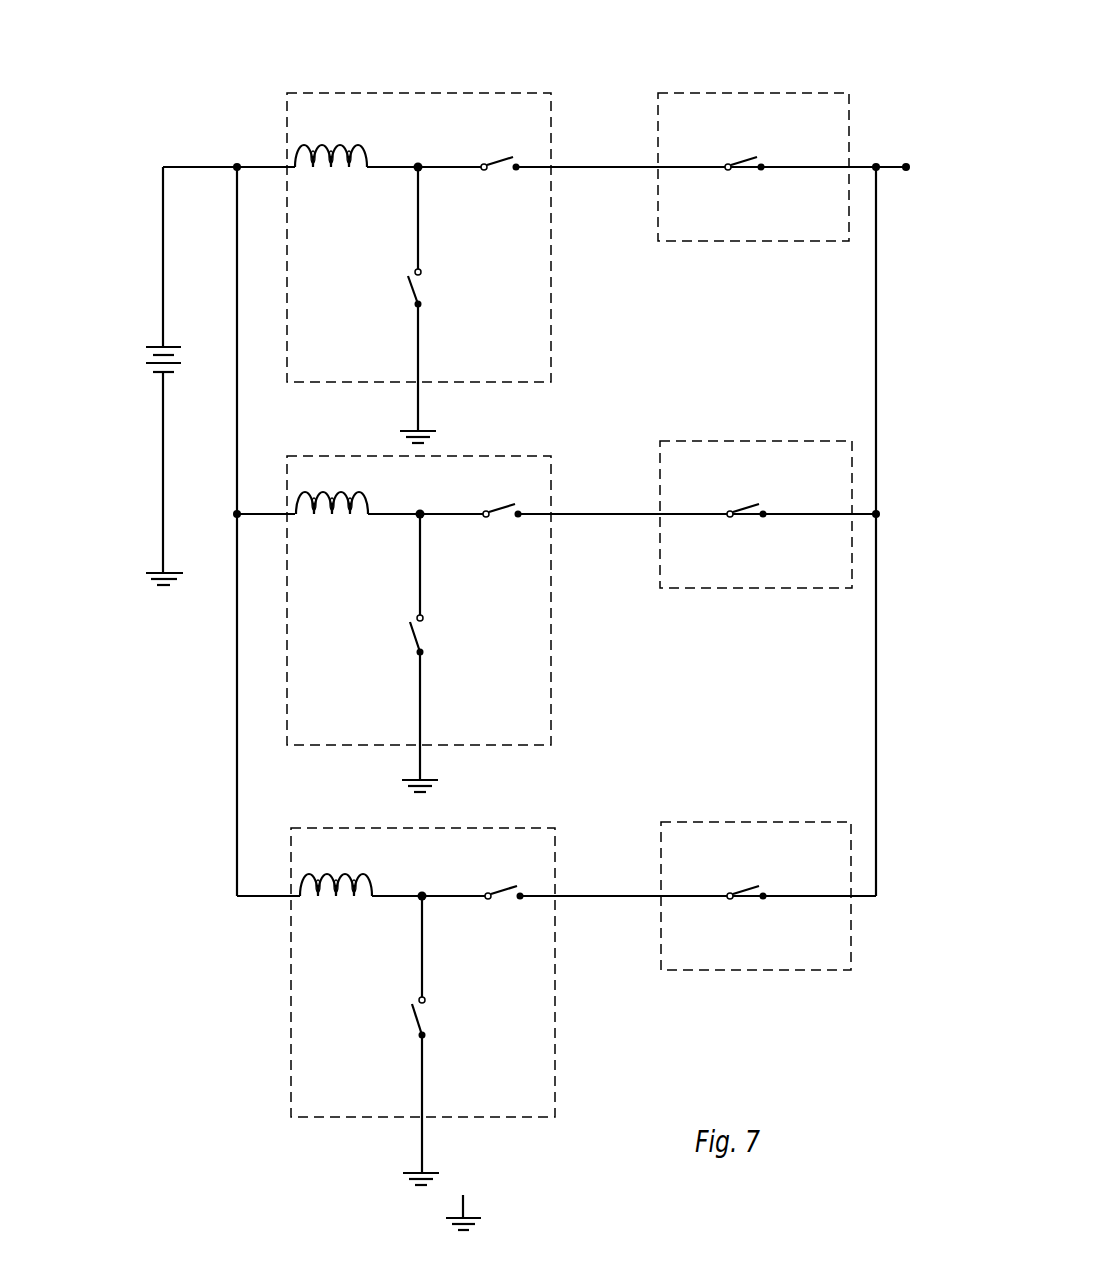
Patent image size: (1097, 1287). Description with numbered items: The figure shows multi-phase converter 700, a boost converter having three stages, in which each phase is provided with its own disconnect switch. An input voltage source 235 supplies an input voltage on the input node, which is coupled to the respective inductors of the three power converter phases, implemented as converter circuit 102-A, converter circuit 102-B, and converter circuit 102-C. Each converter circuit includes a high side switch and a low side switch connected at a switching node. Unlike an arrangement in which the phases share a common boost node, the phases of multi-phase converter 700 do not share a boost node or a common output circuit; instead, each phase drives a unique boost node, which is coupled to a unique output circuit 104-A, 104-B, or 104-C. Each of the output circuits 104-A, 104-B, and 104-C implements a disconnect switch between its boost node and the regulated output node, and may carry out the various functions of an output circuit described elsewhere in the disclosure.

The multi-phase converter 700 is at (770, 28).
The input voltage source 235 is at (137, 371).
The converter circuit 102-A is at (400, 375).
The converter circuit 102-B is at (400, 736).
The converter circuit 102-C is at (405, 1110).
The output circuit 104-A is at (832, 128).
The output circuit 104-B is at (834, 476).
The output circuit 104-C is at (833, 858).